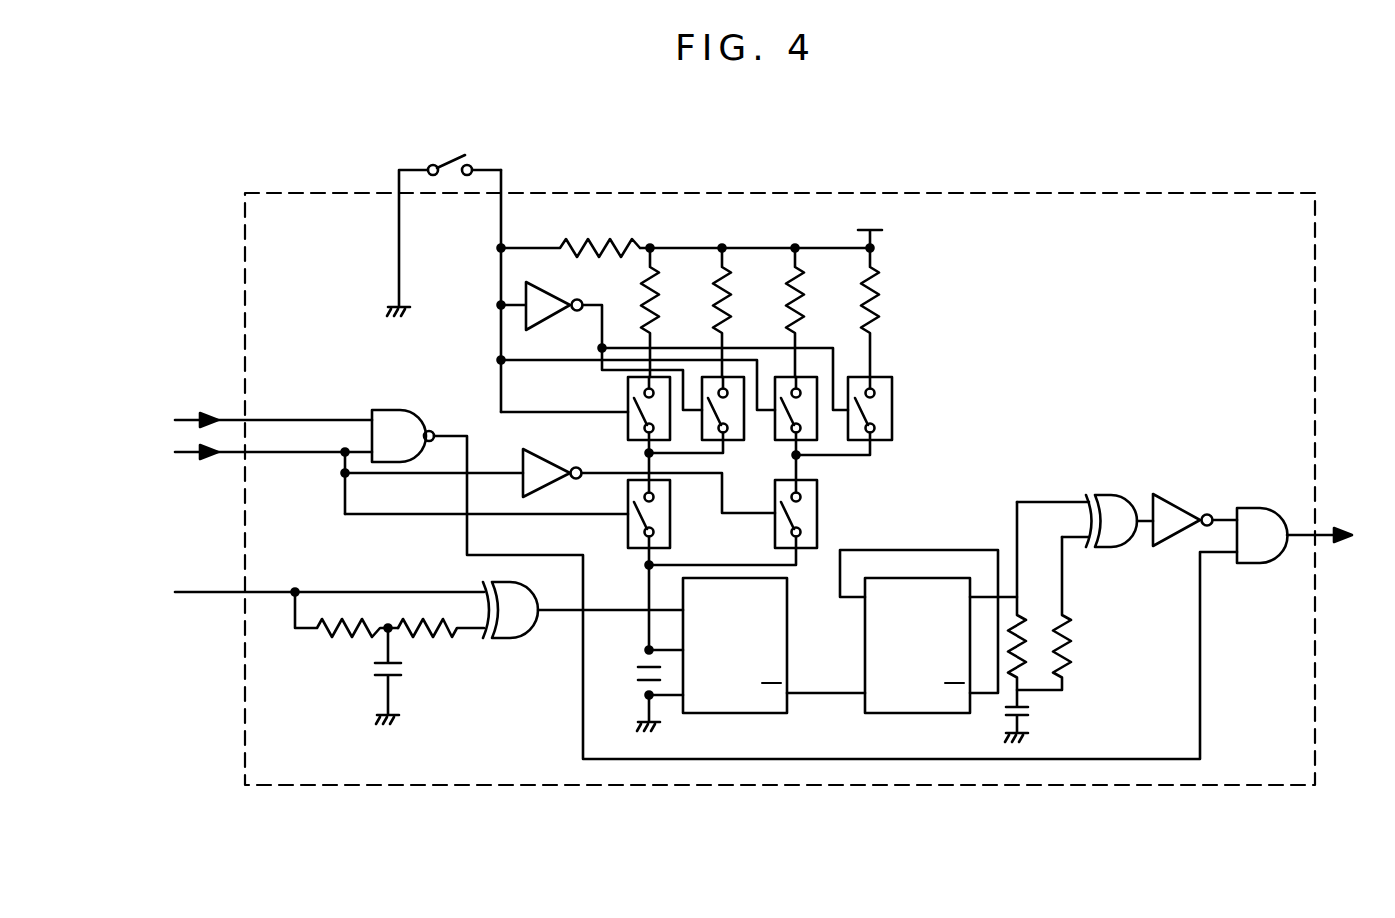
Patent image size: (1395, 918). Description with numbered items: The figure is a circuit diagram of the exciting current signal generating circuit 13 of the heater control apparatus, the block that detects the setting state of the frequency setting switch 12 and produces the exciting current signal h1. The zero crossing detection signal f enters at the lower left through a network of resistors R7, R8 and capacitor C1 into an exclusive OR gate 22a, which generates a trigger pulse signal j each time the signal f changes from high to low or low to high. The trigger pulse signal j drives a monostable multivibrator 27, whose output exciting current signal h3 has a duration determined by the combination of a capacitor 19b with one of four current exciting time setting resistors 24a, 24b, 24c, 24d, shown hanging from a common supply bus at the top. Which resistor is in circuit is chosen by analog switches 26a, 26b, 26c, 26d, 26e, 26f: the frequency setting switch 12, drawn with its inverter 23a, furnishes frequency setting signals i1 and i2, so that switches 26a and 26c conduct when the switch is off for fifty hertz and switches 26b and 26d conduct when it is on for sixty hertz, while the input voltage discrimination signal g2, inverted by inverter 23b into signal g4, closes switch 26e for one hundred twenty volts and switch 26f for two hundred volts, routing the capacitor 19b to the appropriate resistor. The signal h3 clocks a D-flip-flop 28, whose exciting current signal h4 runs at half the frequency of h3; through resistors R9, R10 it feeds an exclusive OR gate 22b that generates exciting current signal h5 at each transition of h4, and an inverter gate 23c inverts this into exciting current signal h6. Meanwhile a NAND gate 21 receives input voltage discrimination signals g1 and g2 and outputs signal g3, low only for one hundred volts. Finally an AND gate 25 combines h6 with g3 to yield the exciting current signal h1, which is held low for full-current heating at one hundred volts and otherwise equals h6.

The frequency setting switch 12 is at (480, 160).
The exciting current signal generating circuit 13 is at (245, 277).
The NAND gate 21 is at (395, 409).
The exclusive OR gate 22a is at (497, 642).
The exclusive OR gate 22b is at (1127, 548).
The inverter gate 23a is at (545, 328).
The inverter gate 23b is at (520, 486).
The inverter gate 23c is at (1190, 545).
The current exciting time setting resistor 24a is at (660, 287).
The current exciting time setting resistor 24b is at (737, 286).
The current exciting time setting resistor 24c is at (812, 287).
The current exciting time setting resistor 24d is at (883, 306).
The AND gate 25 is at (1266, 565).
The analog switch 26a is at (628, 392).
The analog switch 26b is at (745, 420).
The analog switch 26c is at (817, 420).
The analog switch 26d is at (892, 382).
The analog switch 26e is at (670, 492).
The analog switch 26f is at (817, 492).
The monostable multivibrator 27 is at (697, 715).
The D-flip-flop 28 is at (960, 713).
The capacitor 19b is at (640, 670).
The resistor R7 is at (348, 638).
The resistor R8 is at (423, 640).
The resistor R9 is at (1022, 668).
The resistor R10 is at (1067, 668).
The capacitor C1 is at (377, 672).
The zero crossing detection signal f is at (193, 593).
The input voltage discrimination signal g1 is at (197, 418).
The input voltage discrimination signal g2 is at (197, 456).
The input voltage discrimination signal g3 is at (455, 442).
The input voltage discrimination signal g4 is at (626, 476).
The frequency setting signal i1 is at (501, 213).
The frequency setting signal i2 is at (590, 310).
The trigger pulse signal j is at (593, 613).
The exciting current signal h1 is at (1323, 540).
The exciting current signal h3 is at (849, 693).
The exciting current signal h4 is at (1050, 500).
The exciting current signal h5 is at (1147, 507).
The exciting current signal h6 is at (1227, 510).